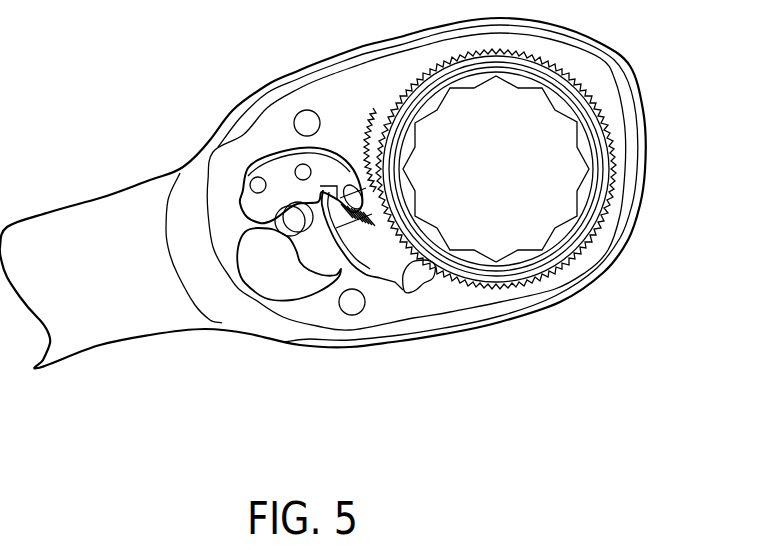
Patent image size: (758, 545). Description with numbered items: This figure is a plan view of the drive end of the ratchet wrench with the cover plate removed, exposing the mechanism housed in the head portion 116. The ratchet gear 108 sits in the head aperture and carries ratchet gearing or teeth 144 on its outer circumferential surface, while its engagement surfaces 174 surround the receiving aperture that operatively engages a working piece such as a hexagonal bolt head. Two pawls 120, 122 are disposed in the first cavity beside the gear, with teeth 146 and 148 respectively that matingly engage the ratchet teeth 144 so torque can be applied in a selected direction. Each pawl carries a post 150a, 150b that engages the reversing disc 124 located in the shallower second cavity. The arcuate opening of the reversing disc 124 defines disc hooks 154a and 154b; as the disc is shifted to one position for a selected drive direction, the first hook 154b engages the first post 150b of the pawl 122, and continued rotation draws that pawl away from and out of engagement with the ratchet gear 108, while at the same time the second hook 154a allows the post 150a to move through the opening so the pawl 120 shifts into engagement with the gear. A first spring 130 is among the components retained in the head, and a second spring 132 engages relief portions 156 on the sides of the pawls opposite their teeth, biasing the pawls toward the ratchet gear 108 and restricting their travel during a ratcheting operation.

The ratchet gear 108 is at (590, 230).
The head portion 116 is at (645, 130).
The pawl 120 is at (420, 268).
The pawl 122 is at (372, 105).
The reversing disc 124 is at (268, 278).
The first spring 130 is at (335, 232).
The second spring 132 is at (336, 280).
The ratchet gearing or teeth 144 is at (578, 75).
The teeth 146 is at (415, 265).
The teeth 148 is at (348, 195).
The post 150a is at (330, 247).
The post 150b is at (341, 200).
The disc hook 154a is at (330, 284).
The disc hook 154b is at (333, 157).
The relief portions 156 is at (352, 302).
The engagement surfaces 174 is at (577, 183).